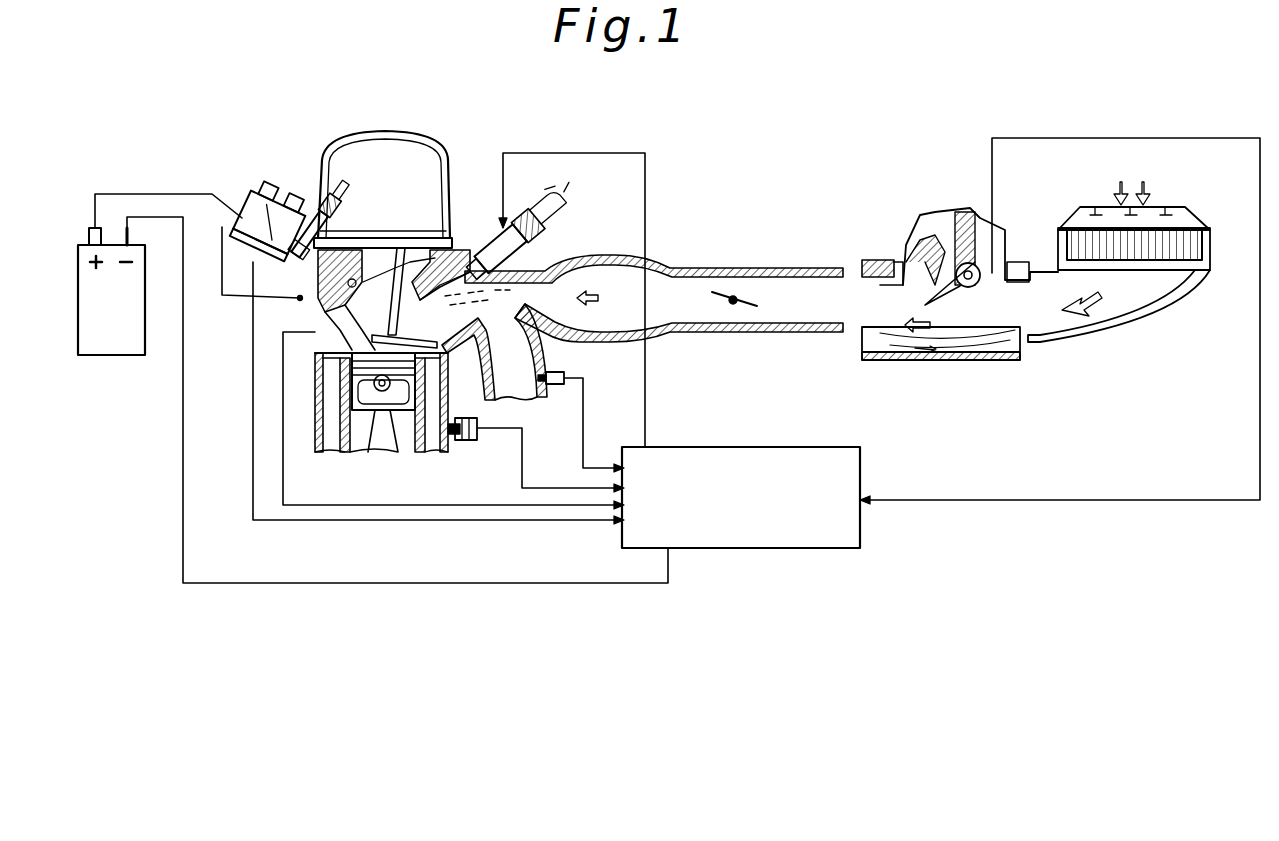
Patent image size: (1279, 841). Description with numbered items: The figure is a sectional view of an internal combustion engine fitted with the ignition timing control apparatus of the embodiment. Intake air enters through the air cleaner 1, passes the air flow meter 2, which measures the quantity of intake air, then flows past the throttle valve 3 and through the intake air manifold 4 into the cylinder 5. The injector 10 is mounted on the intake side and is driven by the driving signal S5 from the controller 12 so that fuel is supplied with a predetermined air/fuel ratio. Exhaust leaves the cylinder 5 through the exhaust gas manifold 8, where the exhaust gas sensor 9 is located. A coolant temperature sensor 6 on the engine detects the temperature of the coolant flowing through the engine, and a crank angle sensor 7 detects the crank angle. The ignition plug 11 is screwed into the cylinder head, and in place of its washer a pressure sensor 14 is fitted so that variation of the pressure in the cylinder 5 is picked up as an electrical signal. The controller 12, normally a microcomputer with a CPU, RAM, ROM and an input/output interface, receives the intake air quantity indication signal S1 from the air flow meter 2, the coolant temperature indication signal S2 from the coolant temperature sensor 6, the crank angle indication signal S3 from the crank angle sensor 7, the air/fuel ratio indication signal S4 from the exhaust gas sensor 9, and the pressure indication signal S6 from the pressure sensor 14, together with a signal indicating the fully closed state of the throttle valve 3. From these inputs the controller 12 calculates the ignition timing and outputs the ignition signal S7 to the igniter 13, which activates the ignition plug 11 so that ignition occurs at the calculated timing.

The air cleaner 1 is at (1180, 210).
The air flow meter 2 is at (958, 222).
The throttle valve 3 is at (756, 300).
The intake air manifold 4 is at (612, 272).
The cylinder 5 is at (450, 368).
The coolant temperature sensor 6 is at (472, 452).
The crank angle sensor 7 is at (258, 256).
The exhaust gas manifold 8 is at (541, 347).
The exhaust gas sensor 9 is at (560, 386).
The injector 10 is at (488, 232).
The ignition plug 11 is at (318, 310).
The controller 12 is at (866, 463).
The igniter 13 is at (118, 343).
The pressure sensor 14 is at (326, 342).
The intake air quantity indication signal S1 is at (968, 500).
The coolant temperature indication signal S2 is at (524, 477).
The crank angle indication signal S3 is at (410, 522).
The air/fuel ratio indication signal S4 is at (580, 443).
The driving signal S5 is at (646, 404).
The pressure indication signal S6 is at (358, 504).
The ignition signal S7 is at (670, 568).